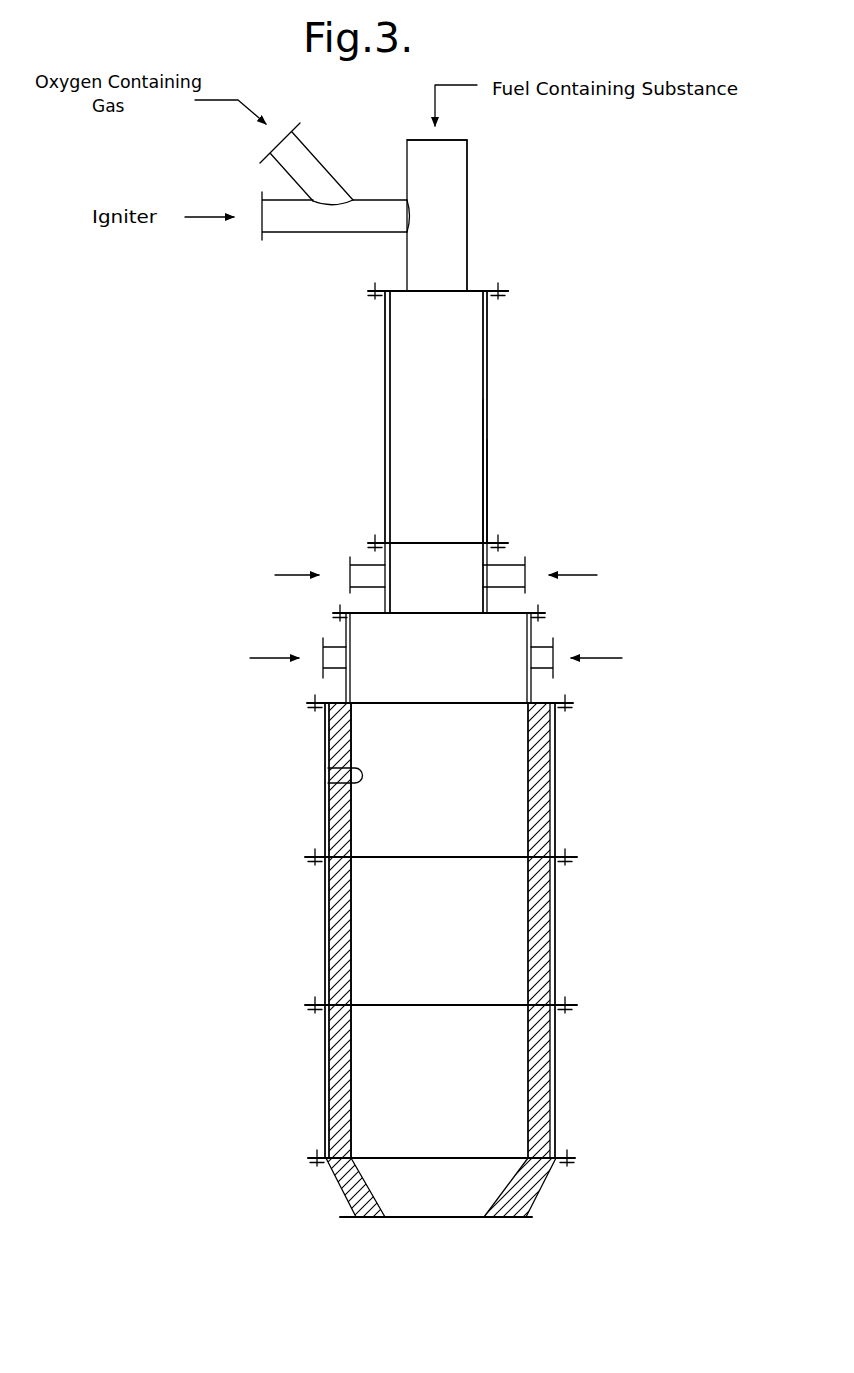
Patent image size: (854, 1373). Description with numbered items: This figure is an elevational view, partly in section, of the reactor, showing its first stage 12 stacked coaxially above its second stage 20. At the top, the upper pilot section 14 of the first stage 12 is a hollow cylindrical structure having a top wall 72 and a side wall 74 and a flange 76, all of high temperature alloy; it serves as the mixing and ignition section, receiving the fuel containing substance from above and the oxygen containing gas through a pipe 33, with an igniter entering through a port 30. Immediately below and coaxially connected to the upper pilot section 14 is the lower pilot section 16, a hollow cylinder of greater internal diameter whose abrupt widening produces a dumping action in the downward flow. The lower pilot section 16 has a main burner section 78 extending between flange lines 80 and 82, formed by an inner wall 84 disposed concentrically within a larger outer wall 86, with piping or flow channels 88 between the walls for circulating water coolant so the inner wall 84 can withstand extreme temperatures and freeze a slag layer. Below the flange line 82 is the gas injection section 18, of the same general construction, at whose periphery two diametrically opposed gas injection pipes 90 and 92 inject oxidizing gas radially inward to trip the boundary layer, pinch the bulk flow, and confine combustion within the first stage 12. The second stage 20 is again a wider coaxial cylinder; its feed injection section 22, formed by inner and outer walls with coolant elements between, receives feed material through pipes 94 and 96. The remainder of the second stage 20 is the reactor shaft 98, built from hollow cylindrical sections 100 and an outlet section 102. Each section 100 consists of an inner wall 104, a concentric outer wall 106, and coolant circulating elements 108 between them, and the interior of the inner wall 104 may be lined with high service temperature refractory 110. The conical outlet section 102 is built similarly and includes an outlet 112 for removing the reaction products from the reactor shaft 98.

The first-stage pilot section 12 is at (497, 345).
The upper pilot section 14 is at (467, 228).
The lower pilot section 16 is at (487, 488).
The gas injection section 18 is at (445, 560).
The second stage 20 is at (561, 766).
The feed injection section 22 is at (453, 652).
The igniter port 30 is at (340, 232).
The oxygen inlet pipe 33 is at (313, 158).
The top wall 72 is at (456, 140).
The side wall 74 is at (467, 186).
The flange 76 is at (487, 291).
The main burner section 78 is at (413, 405).
The flange line 80 is at (368, 292).
The flange line 82 is at (370, 544).
The inner wall 84 is at (480, 384).
The outer wall 86 is at (487, 414).
The flow channels 88 is at (485, 448).
The gas injection pipe 90 is at (508, 566).
The gas injection pipe 92 is at (356, 589).
The feed pipe 94 is at (537, 670).
The feed pipe 96 is at (333, 670).
The reactor shaft 98 is at (487, 925).
The hollow cylindrical section 100 is at (557, 806).
The outlet section 102 is at (530, 1195).
The inner wall 104 is at (328, 775).
The outer wall 106 is at (325, 832).
The coolant circulating elements 108 is at (329, 808).
The refractory 110 is at (346, 912).
The outlet 112 is at (445, 1218).